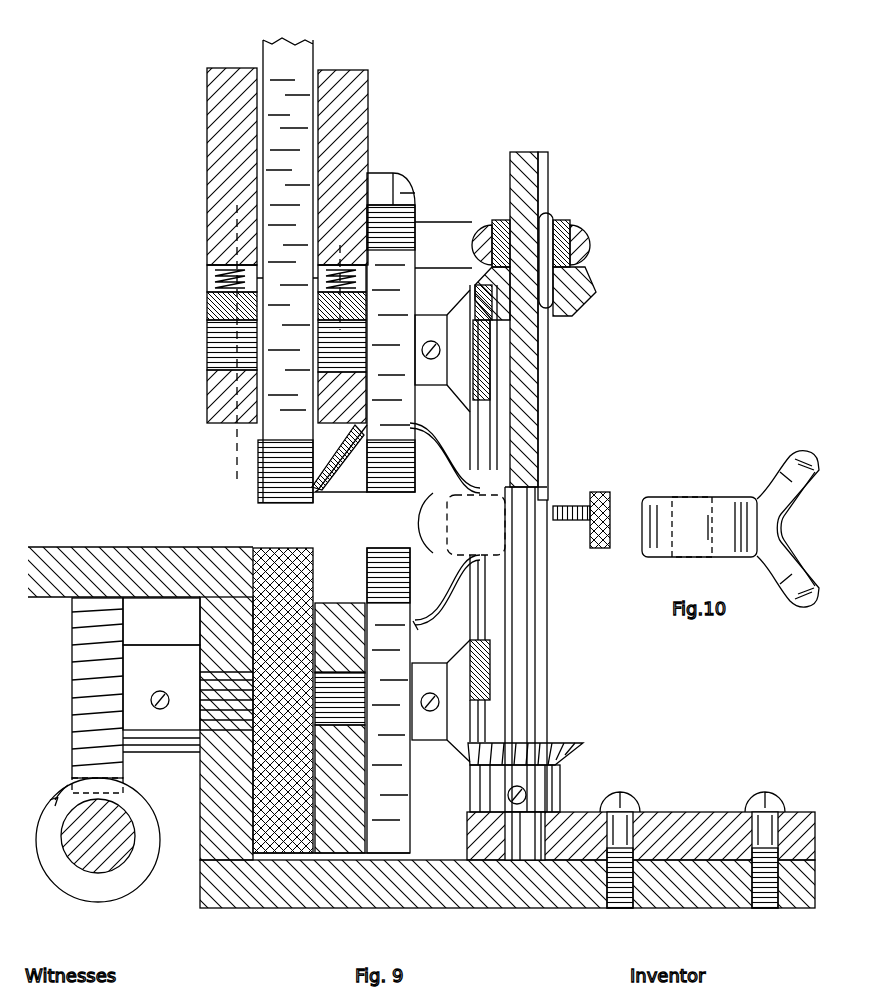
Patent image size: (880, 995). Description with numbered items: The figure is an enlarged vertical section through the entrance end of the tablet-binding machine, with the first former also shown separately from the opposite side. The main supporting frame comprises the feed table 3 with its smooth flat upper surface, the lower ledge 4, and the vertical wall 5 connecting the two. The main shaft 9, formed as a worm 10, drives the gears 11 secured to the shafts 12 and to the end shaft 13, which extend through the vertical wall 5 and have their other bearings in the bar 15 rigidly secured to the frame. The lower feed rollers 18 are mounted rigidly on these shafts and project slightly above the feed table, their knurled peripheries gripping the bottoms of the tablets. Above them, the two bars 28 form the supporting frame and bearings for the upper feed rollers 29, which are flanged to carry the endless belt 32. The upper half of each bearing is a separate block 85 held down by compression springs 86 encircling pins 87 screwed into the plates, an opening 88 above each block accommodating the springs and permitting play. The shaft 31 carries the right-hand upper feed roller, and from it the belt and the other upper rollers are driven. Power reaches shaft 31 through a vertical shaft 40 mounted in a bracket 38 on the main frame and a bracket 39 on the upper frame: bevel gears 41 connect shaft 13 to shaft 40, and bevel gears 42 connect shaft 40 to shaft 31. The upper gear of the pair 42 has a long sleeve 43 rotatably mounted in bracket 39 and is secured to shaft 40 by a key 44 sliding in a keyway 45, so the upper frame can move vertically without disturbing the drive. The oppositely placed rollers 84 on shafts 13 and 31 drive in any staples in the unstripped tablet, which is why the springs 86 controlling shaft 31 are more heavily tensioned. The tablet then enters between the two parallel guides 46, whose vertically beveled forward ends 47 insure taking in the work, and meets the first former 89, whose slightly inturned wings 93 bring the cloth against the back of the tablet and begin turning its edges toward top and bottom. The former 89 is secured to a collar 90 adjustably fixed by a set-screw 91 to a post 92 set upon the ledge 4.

In FIG. 9, the feed table 3 is at (62, 548).
In FIG. 9, the ledge 4 is at (457, 860).
In FIG. 9, the vertical wall 5 is at (200, 776).
In FIG. 9, the main shaft 9 is at (134, 832).
In FIG. 9, the worm 10 is at (145, 880).
In FIG. 9, the gears 11 is at (72, 725).
In FIG. 9, the shafts 12 is at (237, 211).
In FIG. 9, the end shaft 13 is at (200, 668).
In FIG. 9, the bar 15 is at (330, 855).
In FIG. 9, the lower feed rollers 18 is at (262, 548).
In FIG. 9, the bars 28 is at (207, 100).
In FIG. 9, the upper feed rollers 29 is at (258, 460).
In FIG. 9, the shaft 31 is at (207, 352).
In FIG. 9, the endless belt 32 is at (296, 40).
In FIG. 9, the bracket 38 is at (706, 812).
In FIG. 9, the bracket 39 is at (462, 222).
In FIG. 9, the vertical shaft 40 is at (524, 152).
In FIG. 9, the bevel gears 41 is at (556, 742).
In FIG. 9, the bevel gears 42 is at (490, 345).
In FIG. 9, the sleeve 43 is at (502, 218).
In FIG. 9, the key 44 is at (553, 228).
In FIG. 9, the keyway 45 is at (548, 190).
In FIG. 9, the guides 46 is at (352, 495).
In FIG. 9, the beveled forward ends 47 is at (340, 478).
In FIG. 9, the rollers 84 is at (415, 405).
In FIG. 9, the bearing block 85 is at (207, 307).
In FIG. 9, the compression springs 86 is at (320, 280).
In FIG. 9, the pins 87 is at (213, 272).
In FIG. 9, the opening 88 is at (213, 283).
In FIG. 9, the first former 89 is at (420, 522).
In FIG. 10, the first former 89 is at (778, 527).
In FIG. 9, the collar 90 is at (553, 502).
In FIG. 10, the collar 90 is at (700, 496).
In FIG. 9, the set-screw 91 is at (598, 548).
In FIG. 9, the post 92 is at (470, 628).
In FIG. 9, the wings 93 is at (427, 632).
In FIG. 10, the wings 93 is at (802, 474).